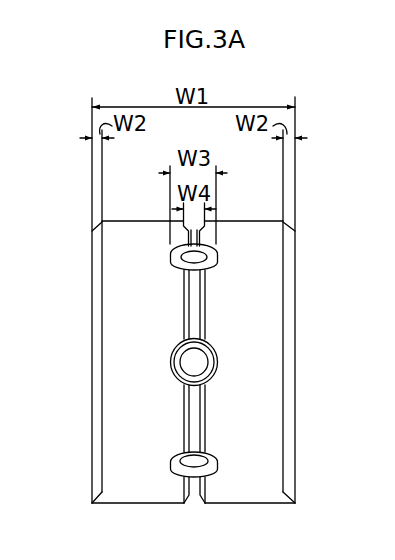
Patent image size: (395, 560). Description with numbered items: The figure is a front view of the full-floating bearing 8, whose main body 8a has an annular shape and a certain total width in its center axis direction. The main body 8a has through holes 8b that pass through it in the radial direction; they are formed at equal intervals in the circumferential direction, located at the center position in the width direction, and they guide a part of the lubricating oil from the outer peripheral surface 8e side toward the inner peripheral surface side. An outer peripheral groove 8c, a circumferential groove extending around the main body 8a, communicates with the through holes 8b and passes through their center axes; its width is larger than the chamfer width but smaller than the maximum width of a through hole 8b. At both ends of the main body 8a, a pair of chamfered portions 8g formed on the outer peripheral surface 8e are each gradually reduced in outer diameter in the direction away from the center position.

The full-floating bearing 8 is at (322, 230).
The main body 8a is at (295, 392).
The through hole 8b is at (217, 364).
The outer peripheral groove 8c is at (204, 317).
The outer peripheral surface 8e is at (258, 283).
The chamfered portion 8g is at (98, 415).